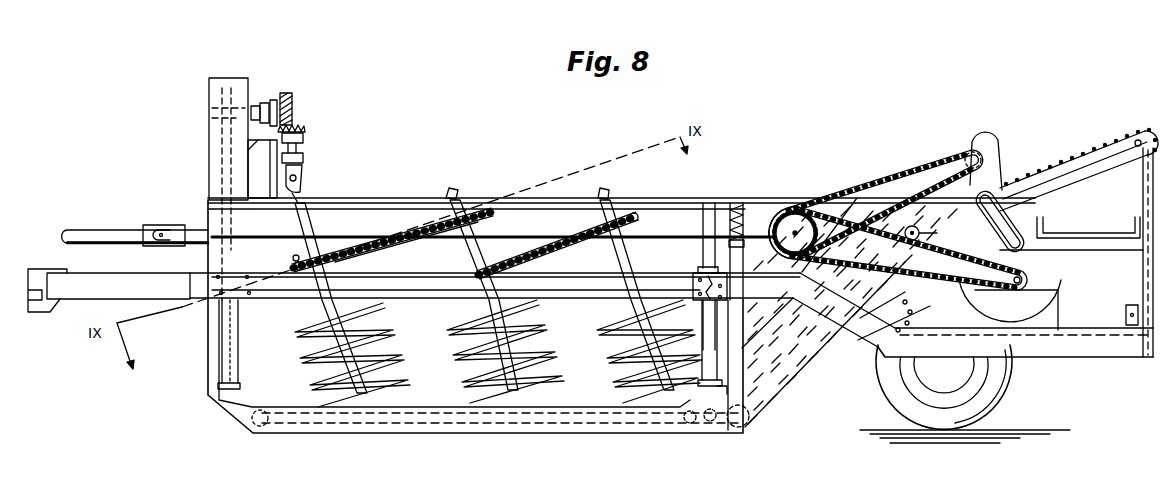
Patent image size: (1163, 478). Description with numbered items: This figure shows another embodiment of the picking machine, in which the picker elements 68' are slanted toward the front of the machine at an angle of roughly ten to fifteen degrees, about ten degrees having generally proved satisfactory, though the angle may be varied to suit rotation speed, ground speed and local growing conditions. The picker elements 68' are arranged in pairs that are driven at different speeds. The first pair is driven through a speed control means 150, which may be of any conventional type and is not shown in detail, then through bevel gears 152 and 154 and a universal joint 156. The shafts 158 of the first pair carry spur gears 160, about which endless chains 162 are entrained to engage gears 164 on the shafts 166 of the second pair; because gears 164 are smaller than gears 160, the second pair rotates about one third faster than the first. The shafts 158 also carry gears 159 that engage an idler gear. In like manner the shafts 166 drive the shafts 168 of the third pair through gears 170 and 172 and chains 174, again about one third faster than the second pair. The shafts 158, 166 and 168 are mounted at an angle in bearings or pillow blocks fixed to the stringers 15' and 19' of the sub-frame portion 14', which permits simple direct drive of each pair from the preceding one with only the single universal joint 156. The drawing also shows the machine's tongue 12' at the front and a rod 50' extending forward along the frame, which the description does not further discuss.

The speed control means 150 is at (240, 79).
The bevel gear 152 is at (288, 103).
The bevel gear 154 is at (300, 126).
The universal joint 156 is at (302, 170).
The shafts 158 is at (305, 223).
The spur gears 160 is at (335, 247).
The endless chains 162 is at (407, 233).
The gears 164 is at (470, 240).
The shafts 166 is at (480, 265).
The shafts 168 is at (627, 263).
The gears 170 is at (483, 250).
The gears 172 is at (623, 205).
The chains 174 is at (573, 230).
The gears 159 is at (293, 256).
The stringer 19' is at (621, 191).
The tongue 12' is at (109, 284).
The stringer 15' is at (542, 300).
The sub-frame portion 14' is at (470, 326).
The control rod 50' is at (135, 212).
The picker elements 68' is at (498, 387).